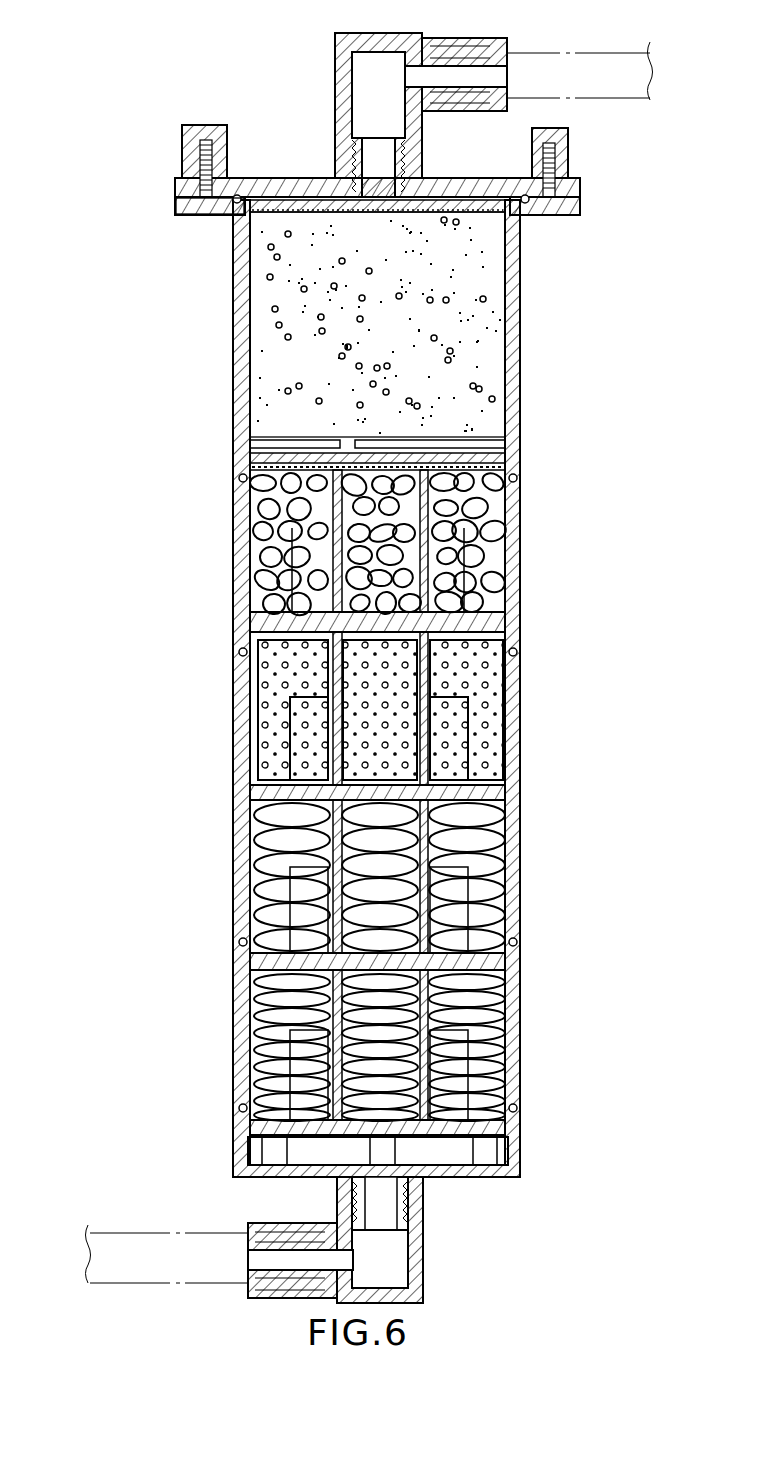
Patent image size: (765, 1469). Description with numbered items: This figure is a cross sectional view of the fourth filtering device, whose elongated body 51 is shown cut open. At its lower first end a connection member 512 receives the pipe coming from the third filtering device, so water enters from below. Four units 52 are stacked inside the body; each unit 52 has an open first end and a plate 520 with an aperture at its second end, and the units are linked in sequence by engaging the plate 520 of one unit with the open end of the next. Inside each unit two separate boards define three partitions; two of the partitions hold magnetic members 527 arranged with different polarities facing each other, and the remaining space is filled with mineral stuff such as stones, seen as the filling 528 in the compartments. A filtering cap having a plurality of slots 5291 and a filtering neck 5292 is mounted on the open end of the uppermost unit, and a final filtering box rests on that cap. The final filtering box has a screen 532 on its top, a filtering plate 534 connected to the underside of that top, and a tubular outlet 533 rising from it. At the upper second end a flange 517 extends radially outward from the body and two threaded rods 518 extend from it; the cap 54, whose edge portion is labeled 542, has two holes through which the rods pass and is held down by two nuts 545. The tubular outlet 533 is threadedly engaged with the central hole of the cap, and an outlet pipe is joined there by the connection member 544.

The filter housing body 51 is at (235, 345).
The unit 52 is at (520, 672).
The cap 54 is at (300, 180).
The connection member 512 is at (423, 1285).
The flange 517 is at (192, 213).
The threaded rods 518 is at (568, 152).
The plate 520 is at (470, 965).
The magnetic member 527 is at (513, 578).
The filter media 528 is at (495, 505).
The screen 532 is at (490, 222).
The tubular outlet 533 is at (372, 155).
The filtering plate 534 is at (507, 230).
The cover flange 542 is at (178, 187).
The connection member 544 is at (412, 35).
The nuts 545 is at (214, 128).
The slots 5291 is at (520, 485).
The filtering neck 5292 is at (240, 480).